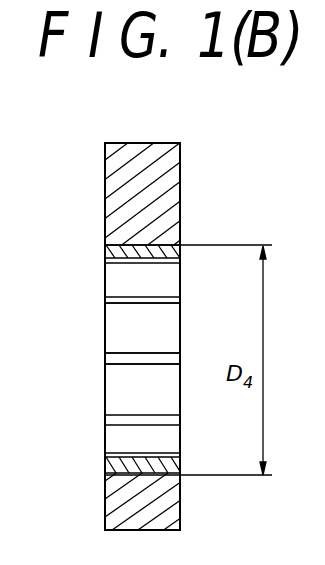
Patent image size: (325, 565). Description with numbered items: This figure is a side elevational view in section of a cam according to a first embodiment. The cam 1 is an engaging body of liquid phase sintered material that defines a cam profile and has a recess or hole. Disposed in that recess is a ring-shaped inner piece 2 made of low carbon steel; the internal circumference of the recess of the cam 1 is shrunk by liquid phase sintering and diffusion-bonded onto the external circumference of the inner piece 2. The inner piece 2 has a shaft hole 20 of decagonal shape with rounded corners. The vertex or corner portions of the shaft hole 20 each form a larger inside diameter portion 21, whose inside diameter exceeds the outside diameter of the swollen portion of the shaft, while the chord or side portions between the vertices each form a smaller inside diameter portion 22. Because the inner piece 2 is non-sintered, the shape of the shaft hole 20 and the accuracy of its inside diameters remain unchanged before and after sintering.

The cam 1 is at (130, 169).
The inner piece 2 is at (110, 245).
The shaft hole 20 is at (152, 336).
The larger inside diameter portion 21 is at (168, 360).
The smaller inside diameter portion 22 is at (166, 400).